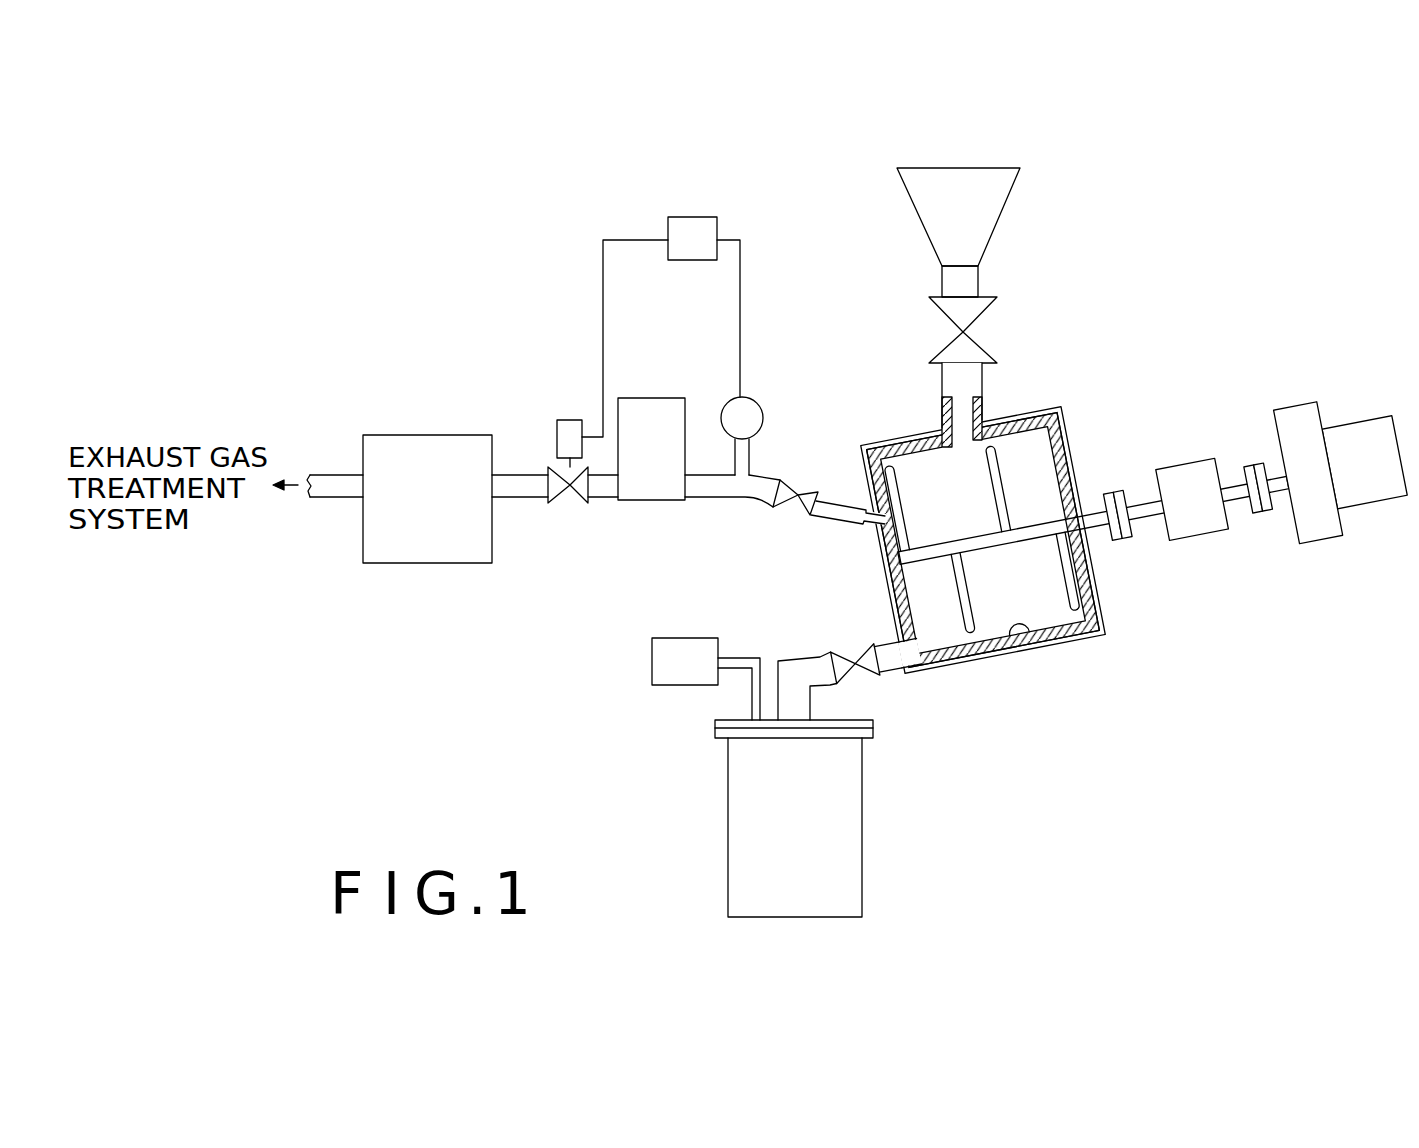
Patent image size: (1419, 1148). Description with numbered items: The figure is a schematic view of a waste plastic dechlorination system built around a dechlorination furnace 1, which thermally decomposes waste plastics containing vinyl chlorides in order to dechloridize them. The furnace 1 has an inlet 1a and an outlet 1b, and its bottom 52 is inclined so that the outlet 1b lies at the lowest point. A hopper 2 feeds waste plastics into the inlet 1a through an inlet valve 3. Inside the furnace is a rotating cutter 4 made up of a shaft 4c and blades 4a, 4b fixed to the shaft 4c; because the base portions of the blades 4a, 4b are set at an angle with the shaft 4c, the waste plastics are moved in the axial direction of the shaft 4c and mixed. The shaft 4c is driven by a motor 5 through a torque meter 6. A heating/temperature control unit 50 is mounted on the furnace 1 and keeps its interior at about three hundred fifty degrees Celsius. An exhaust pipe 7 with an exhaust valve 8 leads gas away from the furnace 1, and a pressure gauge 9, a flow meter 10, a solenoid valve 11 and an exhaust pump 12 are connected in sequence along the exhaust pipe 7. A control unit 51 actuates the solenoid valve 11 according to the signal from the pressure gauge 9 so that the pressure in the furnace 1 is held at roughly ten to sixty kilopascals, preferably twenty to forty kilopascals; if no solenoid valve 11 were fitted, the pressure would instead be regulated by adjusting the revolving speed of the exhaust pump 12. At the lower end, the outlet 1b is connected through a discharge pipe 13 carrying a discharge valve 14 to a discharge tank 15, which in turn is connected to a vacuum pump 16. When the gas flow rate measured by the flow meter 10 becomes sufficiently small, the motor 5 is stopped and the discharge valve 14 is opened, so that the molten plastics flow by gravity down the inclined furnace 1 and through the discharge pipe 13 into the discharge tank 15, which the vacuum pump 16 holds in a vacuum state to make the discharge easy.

The dechlorination furnace 1 is at (1064, 410).
The inlet 1a is at (990, 412).
The outlet 1b is at (907, 670).
The hopper 2 is at (995, 203).
The inlet valve 3 is at (977, 322).
The rotating cutter 4 is at (1086, 534).
The blades 4a is at (888, 498).
The blades 4b is at (1062, 568).
The shaft 4c is at (1035, 524).
The motor 5 is at (1302, 414).
The torque meter 6 is at (1200, 466).
The exhaust pipe 7 is at (828, 500).
The exhaust valve 8 is at (790, 490).
The pressure gauge 9 is at (752, 410).
The flow meter 10 is at (668, 410).
The solenoid valve 11 is at (568, 428).
The exhaust pump 12 is at (470, 440).
The discharge pipe 13 is at (887, 663).
The discharge valve 14 is at (846, 640).
The discharge tank 15 is at (848, 802).
The vacuum pump 16 is at (688, 640).
The heating/temperature control unit 50 is at (902, 440).
The control unit 51 is at (690, 217).
The bottom 52 is at (1019, 634).